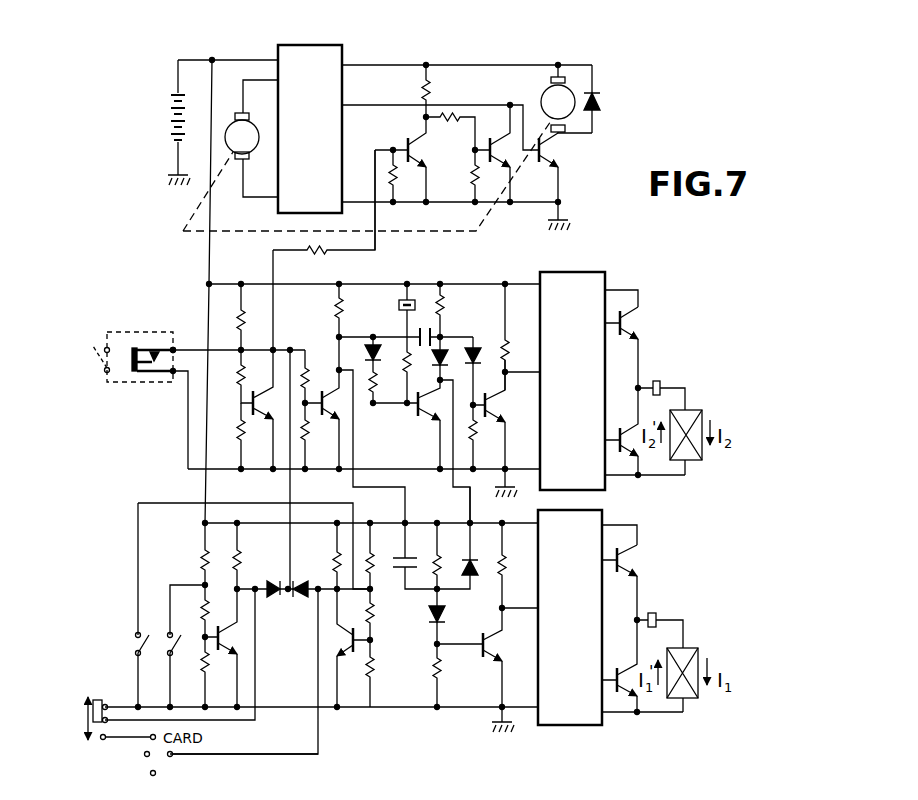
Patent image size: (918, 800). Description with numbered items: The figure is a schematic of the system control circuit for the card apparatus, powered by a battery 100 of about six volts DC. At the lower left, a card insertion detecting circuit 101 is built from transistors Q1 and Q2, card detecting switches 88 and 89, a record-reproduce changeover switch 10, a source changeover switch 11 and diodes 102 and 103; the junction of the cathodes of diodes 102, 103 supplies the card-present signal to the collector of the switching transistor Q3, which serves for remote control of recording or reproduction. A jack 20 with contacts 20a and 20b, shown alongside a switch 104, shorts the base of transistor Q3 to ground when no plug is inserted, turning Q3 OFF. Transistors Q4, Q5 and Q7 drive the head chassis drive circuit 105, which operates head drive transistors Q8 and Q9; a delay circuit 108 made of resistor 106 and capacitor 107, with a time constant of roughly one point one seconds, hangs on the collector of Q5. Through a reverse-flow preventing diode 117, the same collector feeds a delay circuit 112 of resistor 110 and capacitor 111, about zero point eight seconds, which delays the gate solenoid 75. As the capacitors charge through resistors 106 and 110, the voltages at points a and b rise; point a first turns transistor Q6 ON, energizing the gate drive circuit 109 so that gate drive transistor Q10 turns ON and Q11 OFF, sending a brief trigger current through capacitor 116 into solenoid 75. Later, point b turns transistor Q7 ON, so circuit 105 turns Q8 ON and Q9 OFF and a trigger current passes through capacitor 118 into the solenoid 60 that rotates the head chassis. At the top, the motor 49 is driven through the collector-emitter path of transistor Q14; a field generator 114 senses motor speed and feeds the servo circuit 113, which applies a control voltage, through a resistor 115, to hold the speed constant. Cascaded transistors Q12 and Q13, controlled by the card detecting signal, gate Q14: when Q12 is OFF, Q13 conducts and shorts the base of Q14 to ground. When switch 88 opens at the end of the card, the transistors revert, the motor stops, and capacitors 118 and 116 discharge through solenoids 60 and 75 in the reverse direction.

The battery 100 is at (172, 97).
The servo circuit 113 is at (334, 49).
The field generator 114 is at (233, 150).
The motor 49 is at (542, 95).
The transistor Q12 is at (407, 141).
The transistor Q13 is at (475, 150).
The transistor Q14 is at (541, 150).
The resistor 115 is at (318, 251).
The delay circuit 108 is at (414, 299).
The capacitor 107 is at (418, 332).
The resistor 106 is at (455, 308).
The head chassis drive circuit 105 is at (606, 273).
The head drive transistor Q8 is at (626, 321).
The head drive transistor Q9 is at (632, 428).
The capacitor 118 is at (659, 381).
The solenoid 60 is at (690, 459).
The switch 104 is at (99, 357).
The jack 20 is at (160, 345).
The contact 20a is at (150, 352).
The contact 20b is at (159, 360).
The switching transistor Q3 is at (252, 402).
The transistor Q4 is at (325, 406).
The transistor Q5 is at (418, 418).
The transistor Q7 is at (487, 406).
The point b is at (442, 338).
The card insertion detecting circuit 101 is at (128, 520).
The diode 103 is at (270, 580).
The diode 102 is at (303, 580).
The resistor 110 is at (437, 565).
The capacitor 111 is at (396, 570).
The delay circuit 112 is at (430, 596).
The reverse-flow preventing diode 117 is at (474, 574).
The point a is at (440, 594).
The gate drive circuit 109 is at (603, 512).
The gate drive transistor Q10 is at (618, 573).
The gate drive transistor Q11 is at (619, 667).
The capacitor 116 is at (656, 612).
The gate solenoid 75 is at (689, 650).
The card detecting switch 88 is at (147, 648).
The card detecting switch 89 is at (179, 648).
The record-reproduce changeover switch 10 is at (97, 699).
The source changeover switch 11 is at (158, 757).
The transistor Q1 is at (350, 640).
The transistor Q2 is at (228, 642).
The transistor Q6 is at (481, 657).